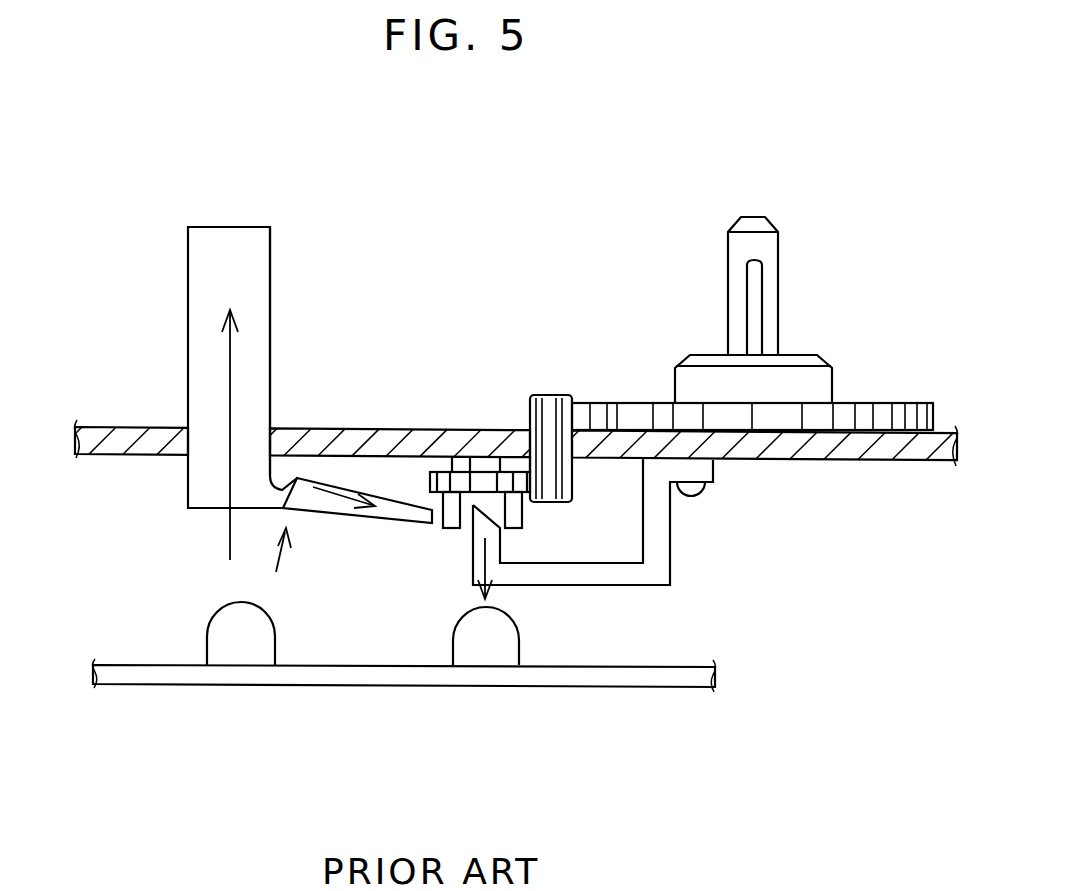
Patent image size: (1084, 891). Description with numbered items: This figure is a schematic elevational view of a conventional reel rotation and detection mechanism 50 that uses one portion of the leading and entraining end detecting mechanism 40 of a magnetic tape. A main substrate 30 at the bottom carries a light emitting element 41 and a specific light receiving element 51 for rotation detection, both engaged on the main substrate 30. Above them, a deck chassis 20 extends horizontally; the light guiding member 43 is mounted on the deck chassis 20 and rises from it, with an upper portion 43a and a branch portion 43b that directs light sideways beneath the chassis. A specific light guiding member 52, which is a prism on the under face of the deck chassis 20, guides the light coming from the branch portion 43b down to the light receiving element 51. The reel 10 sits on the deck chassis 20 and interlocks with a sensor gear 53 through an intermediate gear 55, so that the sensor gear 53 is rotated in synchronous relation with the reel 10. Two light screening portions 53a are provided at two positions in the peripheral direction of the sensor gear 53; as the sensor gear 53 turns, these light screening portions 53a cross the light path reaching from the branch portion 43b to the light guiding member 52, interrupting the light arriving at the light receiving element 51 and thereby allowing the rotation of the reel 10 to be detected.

The reel 10 is at (805, 348).
The deck chassis 20 is at (880, 463).
The main substrate 30 is at (670, 688).
The leading and entraining end detecting mechanism 40 is at (151, 290).
The light emitting element 41 is at (243, 650).
The light guiding member 43 is at (165, 356).
The lever upper portion 43a is at (270, 288).
The branch portion 43b is at (353, 522).
The reel rotation and detection mechanism 50 is at (506, 378).
The light receiving element 51 is at (492, 650).
The specific light guiding member 52 is at (617, 590).
The sensor gear 53 is at (437, 470).
The light screening portions 53a is at (452, 530).
The intermediate gear 55 is at (526, 410).